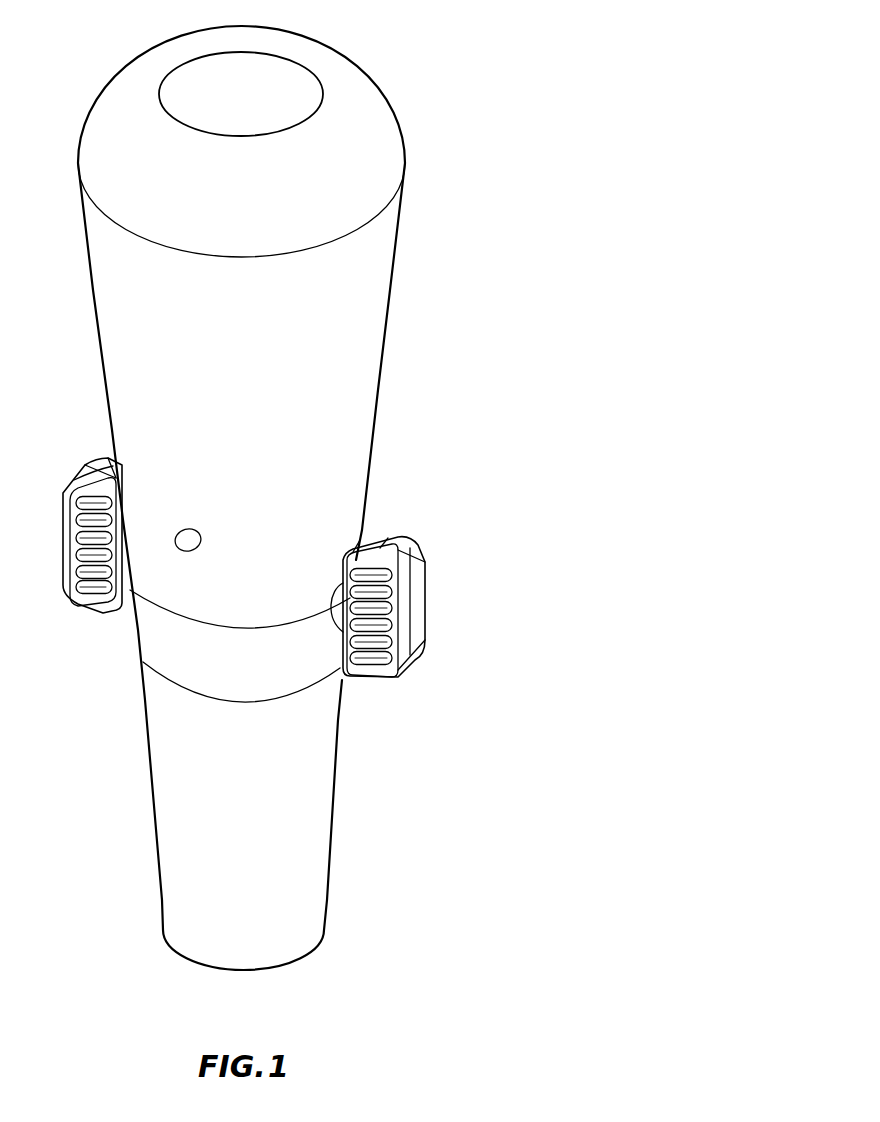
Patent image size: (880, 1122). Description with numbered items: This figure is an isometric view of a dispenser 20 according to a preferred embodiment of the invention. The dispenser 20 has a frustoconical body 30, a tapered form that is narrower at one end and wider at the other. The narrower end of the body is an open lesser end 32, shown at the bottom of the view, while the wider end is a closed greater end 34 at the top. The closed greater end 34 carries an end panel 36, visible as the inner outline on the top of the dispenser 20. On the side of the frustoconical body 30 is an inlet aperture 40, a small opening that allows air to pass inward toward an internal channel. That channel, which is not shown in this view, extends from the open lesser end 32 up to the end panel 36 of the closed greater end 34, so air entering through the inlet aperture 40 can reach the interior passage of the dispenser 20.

The dispenser 20 is at (342, 525).
The frustoconical body 30 is at (377, 423).
The open lesser end 32 is at (287, 966).
The closed greater end 34 is at (367, 63).
The end panel 36 is at (300, 95).
The inlet aperture 40 is at (201, 535).